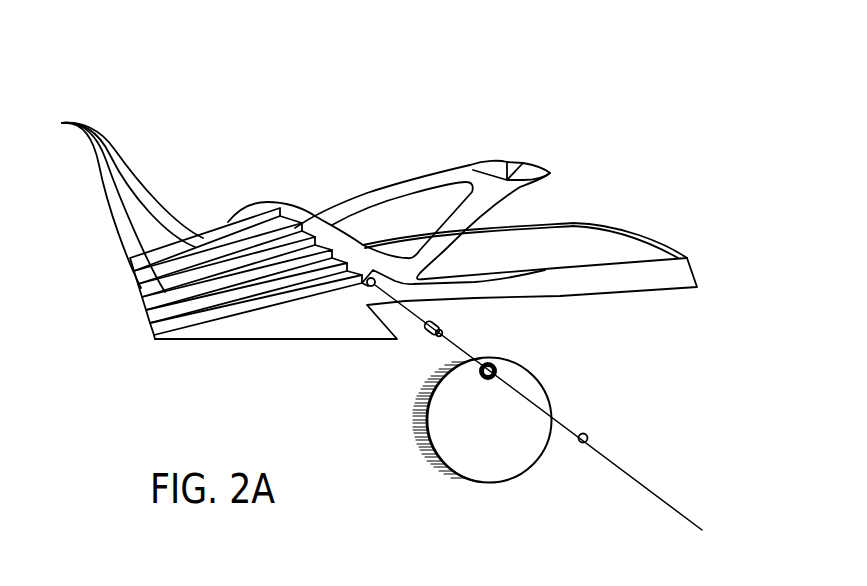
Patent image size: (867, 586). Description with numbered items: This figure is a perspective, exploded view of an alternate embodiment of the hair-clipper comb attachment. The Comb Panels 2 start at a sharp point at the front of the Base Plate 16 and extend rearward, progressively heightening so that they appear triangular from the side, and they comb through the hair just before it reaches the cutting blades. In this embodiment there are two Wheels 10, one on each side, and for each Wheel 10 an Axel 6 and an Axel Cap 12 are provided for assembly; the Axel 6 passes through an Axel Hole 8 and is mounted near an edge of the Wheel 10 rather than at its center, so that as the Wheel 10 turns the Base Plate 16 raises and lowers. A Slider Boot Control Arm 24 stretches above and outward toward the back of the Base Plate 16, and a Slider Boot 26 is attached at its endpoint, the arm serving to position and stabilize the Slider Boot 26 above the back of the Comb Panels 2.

The Comb Panels 2 is at (64, 123).
The Slider Boot Control Arm 24 is at (334, 218).
The Slider Boot 26 is at (500, 167).
The Base Plate 16 is at (584, 254).
The Axel Hole 8 is at (366, 284).
The Axel 6 is at (426, 331).
The Wheel 10 is at (478, 447).
The Axel Cap 12 is at (585, 435).